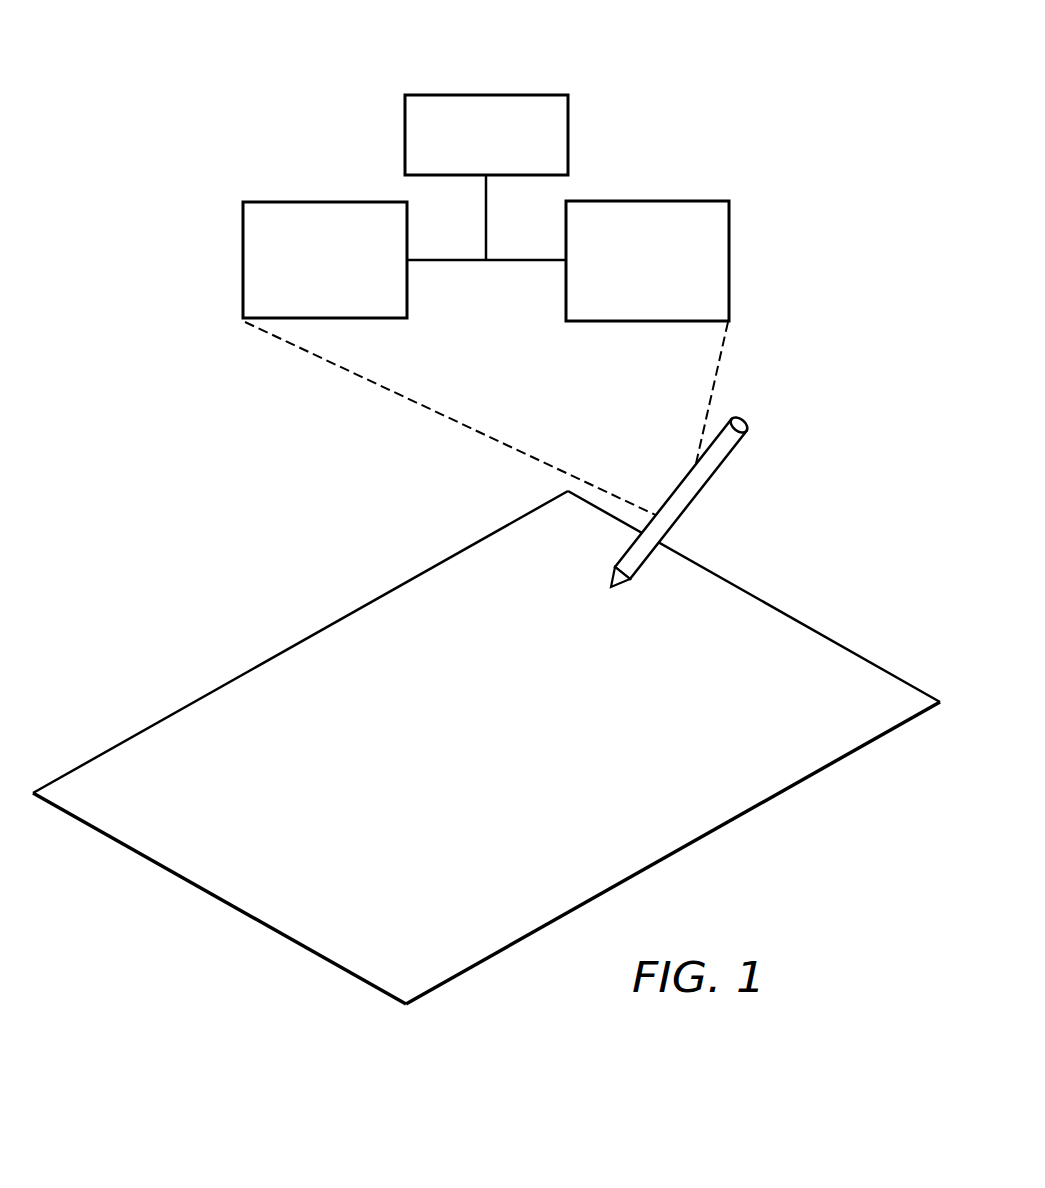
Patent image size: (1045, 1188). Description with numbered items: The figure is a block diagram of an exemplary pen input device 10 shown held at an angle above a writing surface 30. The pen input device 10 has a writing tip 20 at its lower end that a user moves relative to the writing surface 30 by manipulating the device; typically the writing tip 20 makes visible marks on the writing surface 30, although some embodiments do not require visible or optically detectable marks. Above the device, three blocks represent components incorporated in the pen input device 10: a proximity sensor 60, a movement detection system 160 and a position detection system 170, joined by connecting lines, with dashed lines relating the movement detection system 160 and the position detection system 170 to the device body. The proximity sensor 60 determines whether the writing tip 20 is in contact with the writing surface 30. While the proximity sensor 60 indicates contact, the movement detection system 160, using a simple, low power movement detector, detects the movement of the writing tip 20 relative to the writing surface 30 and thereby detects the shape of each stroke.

The pen input device 10 is at (727, 477).
The writing tip 20 is at (593, 596).
The writing surface 30 is at (222, 699).
The proximity sensor 60 is at (500, 94).
The movement detection system 160 is at (310, 201).
The position detection system 170 is at (660, 200).